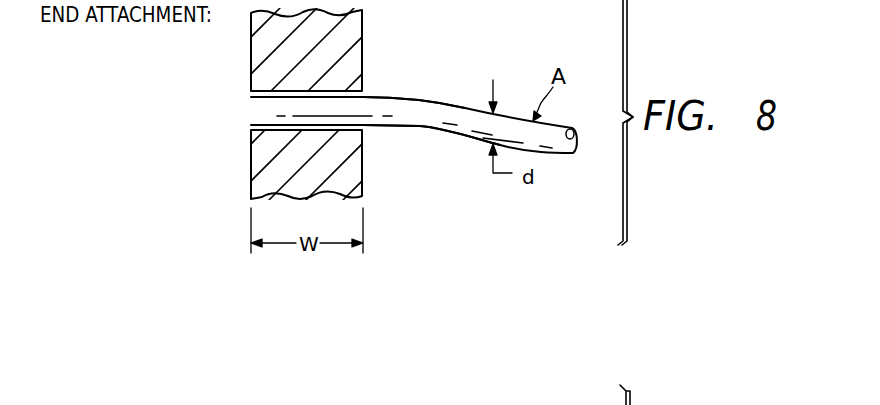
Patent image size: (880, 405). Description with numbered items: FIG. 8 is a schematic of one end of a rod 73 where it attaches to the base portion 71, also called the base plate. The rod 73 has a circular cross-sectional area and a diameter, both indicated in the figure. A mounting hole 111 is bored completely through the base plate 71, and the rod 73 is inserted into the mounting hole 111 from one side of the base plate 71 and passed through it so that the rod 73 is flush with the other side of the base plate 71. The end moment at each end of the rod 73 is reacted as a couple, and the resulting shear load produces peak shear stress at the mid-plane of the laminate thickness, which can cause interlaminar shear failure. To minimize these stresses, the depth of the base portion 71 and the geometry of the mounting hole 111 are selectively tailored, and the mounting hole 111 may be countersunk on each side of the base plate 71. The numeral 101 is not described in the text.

The base portion 71 is at (251, 50).
The rod 73 is at (440, 100).
The mounting hole 111 is at (365, 96).
The lower surface of strip 101 is at (371, 129).